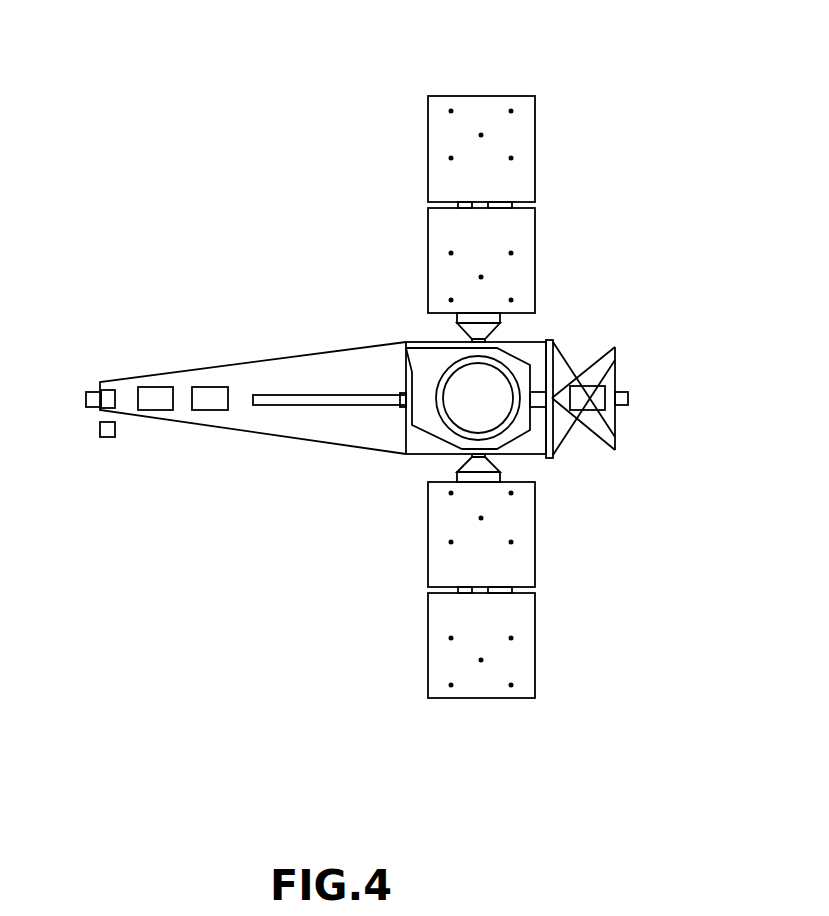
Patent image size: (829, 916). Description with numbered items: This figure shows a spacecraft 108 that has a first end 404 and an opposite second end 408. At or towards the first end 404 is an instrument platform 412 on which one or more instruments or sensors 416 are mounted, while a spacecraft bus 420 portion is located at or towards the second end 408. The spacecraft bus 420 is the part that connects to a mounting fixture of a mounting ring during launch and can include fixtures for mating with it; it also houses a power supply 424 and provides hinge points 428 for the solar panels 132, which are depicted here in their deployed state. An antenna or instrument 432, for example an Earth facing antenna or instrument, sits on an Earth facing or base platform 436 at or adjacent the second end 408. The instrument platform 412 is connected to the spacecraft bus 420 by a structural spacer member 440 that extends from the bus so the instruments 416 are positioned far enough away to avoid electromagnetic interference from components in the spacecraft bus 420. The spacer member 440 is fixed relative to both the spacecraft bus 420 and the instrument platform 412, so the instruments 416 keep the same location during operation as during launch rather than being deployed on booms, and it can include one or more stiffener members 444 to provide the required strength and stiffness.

The spacecraft 108 is at (322, 335).
The solar panels 132 is at (487, 96).
The first end 404 is at (100, 415).
The second end 408 is at (592, 353).
The instrument platform 412 is at (174, 386).
The instruments or sensors 416 is at (95, 392).
The spacecraft bus 420 is at (553, 456).
The power supply 424 is at (497, 380).
The hinge points 428 is at (472, 458).
The antenna or instrument 432 is at (617, 373).
The base platform 436 is at (567, 341).
The spacer member 440 is at (248, 362).
The stiffener members 444 is at (267, 406).